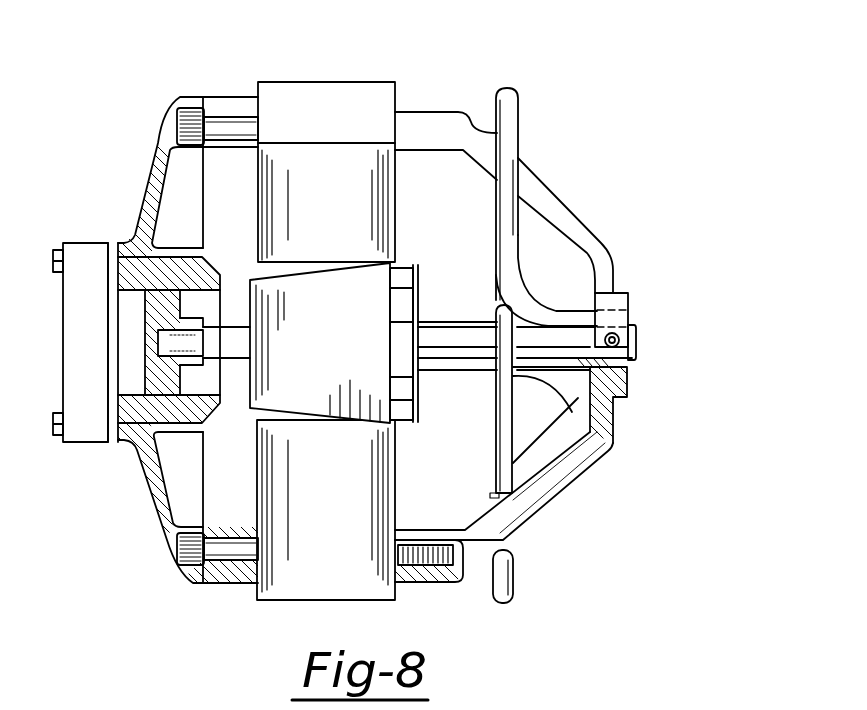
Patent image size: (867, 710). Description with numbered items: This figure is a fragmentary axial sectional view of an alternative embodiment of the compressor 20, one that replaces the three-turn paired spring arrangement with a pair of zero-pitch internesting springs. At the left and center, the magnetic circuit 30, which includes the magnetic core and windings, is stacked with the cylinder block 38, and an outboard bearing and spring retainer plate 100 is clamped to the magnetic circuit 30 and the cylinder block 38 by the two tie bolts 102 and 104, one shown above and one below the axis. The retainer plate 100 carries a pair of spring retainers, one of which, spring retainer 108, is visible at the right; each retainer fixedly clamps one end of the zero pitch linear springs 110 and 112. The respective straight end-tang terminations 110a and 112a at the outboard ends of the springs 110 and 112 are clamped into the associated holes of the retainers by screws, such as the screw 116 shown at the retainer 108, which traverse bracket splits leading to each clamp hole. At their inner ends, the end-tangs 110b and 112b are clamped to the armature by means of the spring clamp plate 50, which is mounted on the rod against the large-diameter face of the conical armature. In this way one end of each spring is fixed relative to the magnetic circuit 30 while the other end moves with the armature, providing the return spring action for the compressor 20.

The compressor 20 is at (637, 130).
The magnetic circuit 30 is at (402, 38).
The cylinder block 38 is at (190, 96).
The spring clamp plate 50 is at (412, 420).
The outboard bearing and spring retainer plate 100 is at (578, 210).
The tie bolt 102 is at (163, 125).
The tie bolt 104 is at (178, 562).
The spring retainer 108 is at (622, 309).
The zero pitch linear spring 110 is at (512, 584).
The straight end-tang termination 110a is at (540, 385).
The end-tang 110b is at (445, 332).
The zero pitch linear spring 112 is at (512, 130).
The straight end-tang termination 112a is at (570, 300).
The end-tang 112b is at (452, 367).
The screw 116 is at (619, 348).